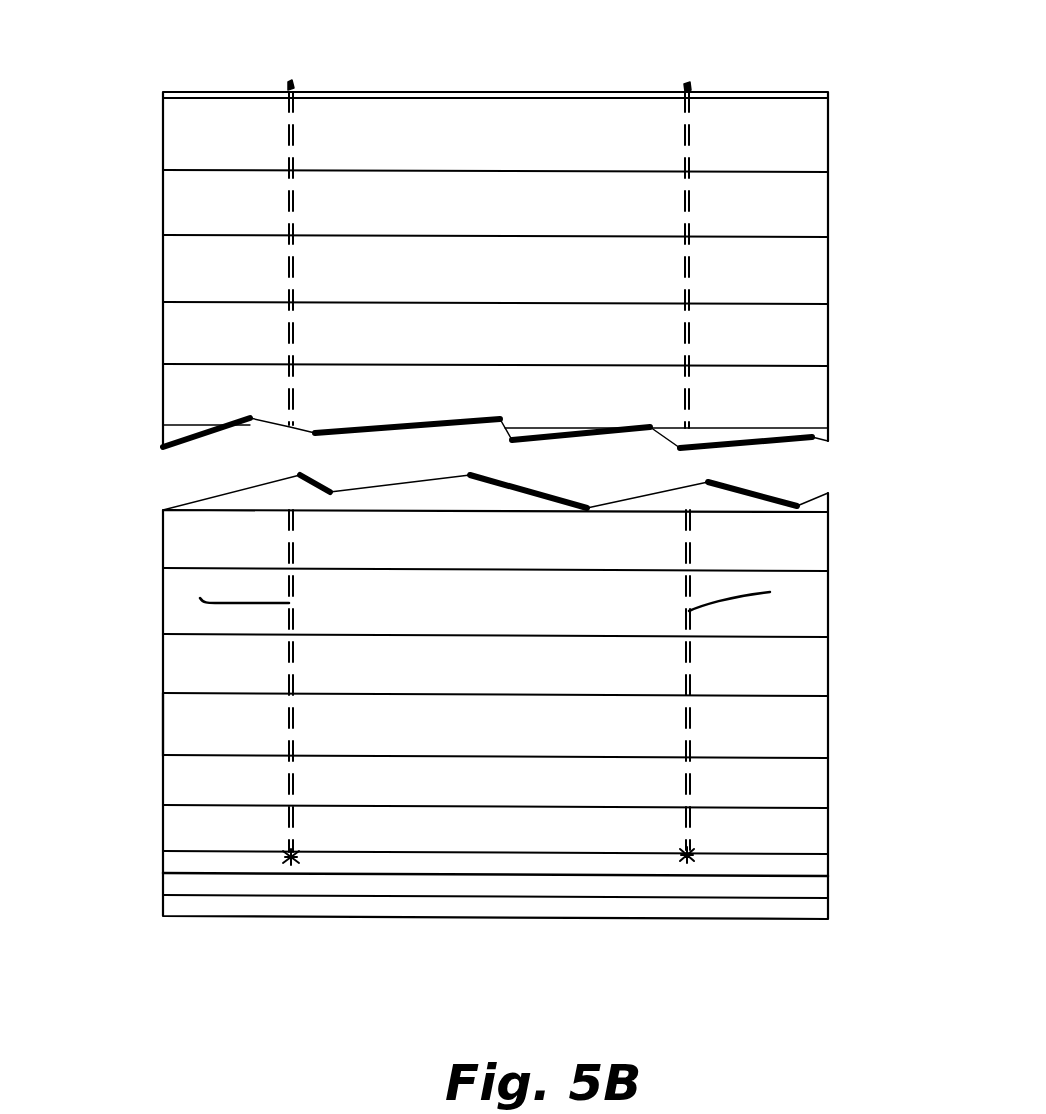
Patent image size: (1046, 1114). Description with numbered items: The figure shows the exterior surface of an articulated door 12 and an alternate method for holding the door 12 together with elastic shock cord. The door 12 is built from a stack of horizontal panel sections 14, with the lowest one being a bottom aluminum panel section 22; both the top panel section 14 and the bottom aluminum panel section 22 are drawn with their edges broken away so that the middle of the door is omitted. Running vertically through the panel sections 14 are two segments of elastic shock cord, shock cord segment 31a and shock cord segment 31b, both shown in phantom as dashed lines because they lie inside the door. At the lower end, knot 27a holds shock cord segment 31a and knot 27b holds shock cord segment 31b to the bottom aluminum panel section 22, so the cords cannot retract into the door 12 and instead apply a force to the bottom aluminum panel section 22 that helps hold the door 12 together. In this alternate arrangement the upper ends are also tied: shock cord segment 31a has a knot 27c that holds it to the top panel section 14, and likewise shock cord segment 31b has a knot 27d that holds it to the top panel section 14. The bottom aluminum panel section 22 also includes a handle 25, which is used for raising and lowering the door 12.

The articulated door 12 is at (140, 728).
The panel section 14 is at (795, 192).
The bottom aluminum panel section 22 is at (812, 864).
The handle 25 is at (175, 884).
The knot 27a is at (285, 870).
The knot 27b is at (684, 868).
The knot 27c is at (290, 88).
The knot 27d is at (689, 90).
The shock cord segment 31a is at (200, 598).
The shock cord segment 31b is at (770, 592).